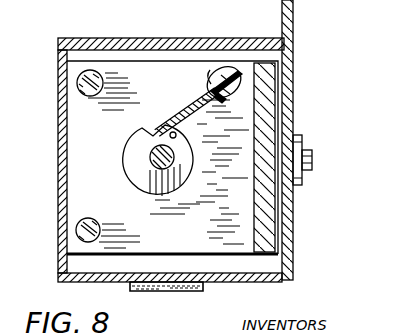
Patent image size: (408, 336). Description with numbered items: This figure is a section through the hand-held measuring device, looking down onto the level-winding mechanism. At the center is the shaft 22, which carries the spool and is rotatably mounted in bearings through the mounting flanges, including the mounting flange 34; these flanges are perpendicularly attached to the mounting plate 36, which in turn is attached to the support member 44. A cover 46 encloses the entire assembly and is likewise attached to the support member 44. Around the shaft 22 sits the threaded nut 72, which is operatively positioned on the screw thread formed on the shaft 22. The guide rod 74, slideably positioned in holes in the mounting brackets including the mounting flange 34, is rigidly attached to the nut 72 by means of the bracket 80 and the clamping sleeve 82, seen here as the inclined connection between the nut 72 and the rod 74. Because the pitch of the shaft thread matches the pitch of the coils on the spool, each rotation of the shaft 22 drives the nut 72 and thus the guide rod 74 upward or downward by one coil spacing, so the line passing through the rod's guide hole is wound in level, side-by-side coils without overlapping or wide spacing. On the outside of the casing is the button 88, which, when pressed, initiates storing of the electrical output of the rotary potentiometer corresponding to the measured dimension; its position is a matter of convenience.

The shaft 22 is at (152, 158).
The mounting flange 34 is at (151, 68).
The mounting plate 36 is at (270, 208).
The support member 44 is at (294, 29).
The cover 46 is at (90, 38).
The threaded nut 72 is at (185, 154).
The guide rod 74 is at (226, 76).
The bracket 80 is at (186, 118).
The clamping sleeve 82 is at (210, 76).
The button 88 is at (316, 156).